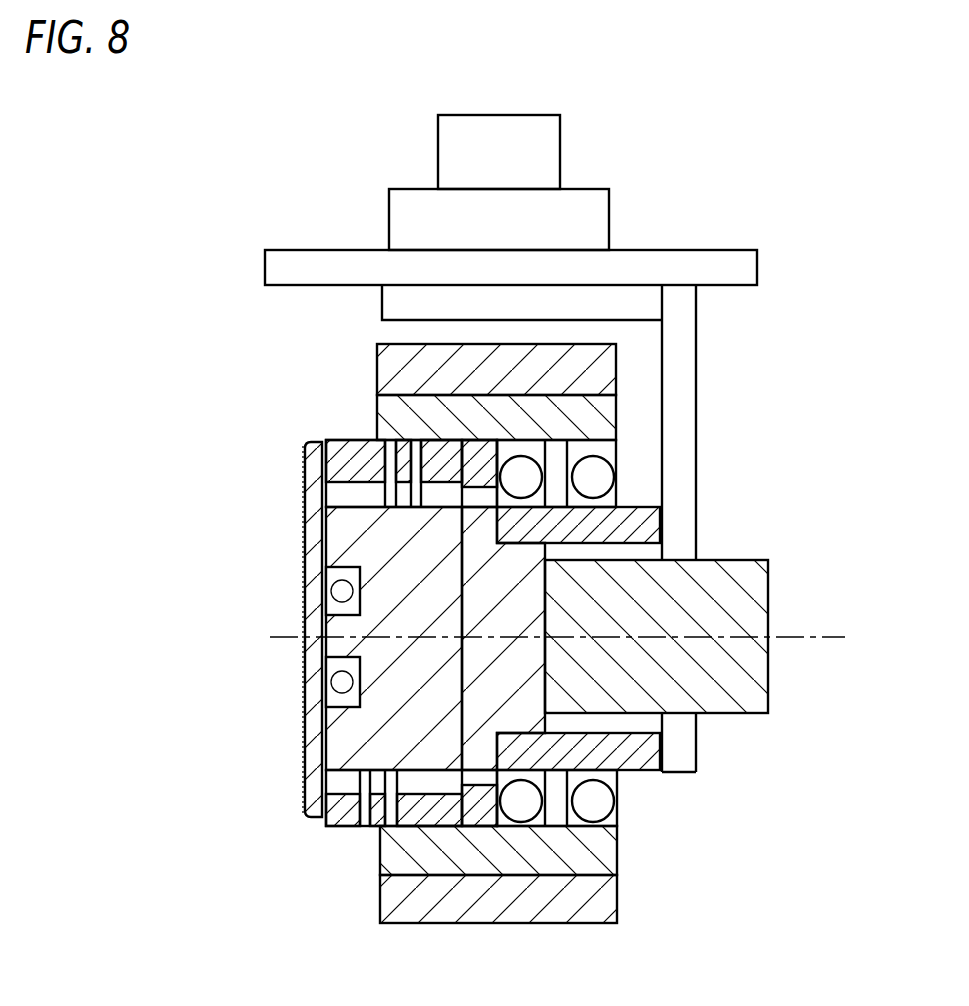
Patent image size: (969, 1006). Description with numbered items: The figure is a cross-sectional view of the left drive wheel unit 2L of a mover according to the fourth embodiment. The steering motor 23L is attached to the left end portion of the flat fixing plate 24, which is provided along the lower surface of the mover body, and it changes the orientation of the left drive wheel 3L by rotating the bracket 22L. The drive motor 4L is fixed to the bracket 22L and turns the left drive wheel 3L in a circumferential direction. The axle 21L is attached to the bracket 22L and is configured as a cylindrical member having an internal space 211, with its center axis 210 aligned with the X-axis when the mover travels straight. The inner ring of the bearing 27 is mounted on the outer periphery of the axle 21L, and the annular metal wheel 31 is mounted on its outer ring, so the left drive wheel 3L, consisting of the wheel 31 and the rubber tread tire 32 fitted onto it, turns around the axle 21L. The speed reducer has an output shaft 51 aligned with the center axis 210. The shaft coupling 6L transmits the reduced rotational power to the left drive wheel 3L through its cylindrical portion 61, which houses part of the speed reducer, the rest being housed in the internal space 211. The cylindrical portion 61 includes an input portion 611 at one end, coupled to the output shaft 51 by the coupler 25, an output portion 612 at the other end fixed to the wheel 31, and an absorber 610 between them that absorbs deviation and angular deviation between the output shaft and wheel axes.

The left drive wheel unit 2L is at (760, 163).
The steering motor 23L is at (540, 143).
The fixing plate 24 is at (647, 258).
The bracket 22L is at (687, 360).
The axle 21L is at (643, 528).
The internal space 211 is at (652, 722).
The center axis 210 is at (827, 635).
The drive motor 4L is at (758, 667).
The bearing 27 is at (612, 817).
The left drive wheel 3L is at (523, 660).
The wheel 31 is at (607, 853).
The tread tire 32 is at (463, 915).
The absorber 610 is at (338, 517).
The input portion 611 is at (337, 463).
The output portion 612 is at (437, 458).
The shaft coupling 6L is at (357, 639).
The cylindrical portion 61 is at (380, 820).
The output shaft 51 is at (338, 634).
The coupler 25 is at (312, 697).